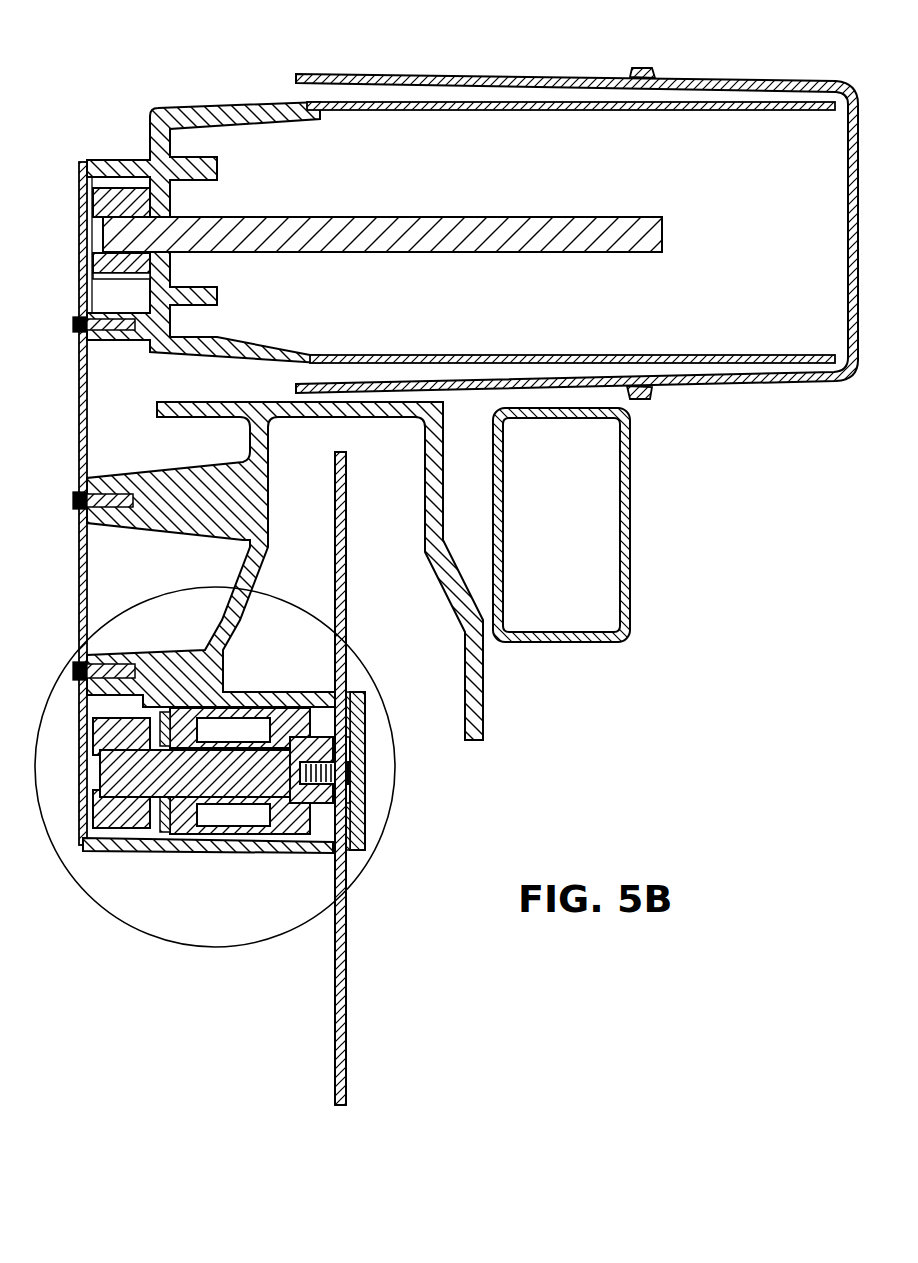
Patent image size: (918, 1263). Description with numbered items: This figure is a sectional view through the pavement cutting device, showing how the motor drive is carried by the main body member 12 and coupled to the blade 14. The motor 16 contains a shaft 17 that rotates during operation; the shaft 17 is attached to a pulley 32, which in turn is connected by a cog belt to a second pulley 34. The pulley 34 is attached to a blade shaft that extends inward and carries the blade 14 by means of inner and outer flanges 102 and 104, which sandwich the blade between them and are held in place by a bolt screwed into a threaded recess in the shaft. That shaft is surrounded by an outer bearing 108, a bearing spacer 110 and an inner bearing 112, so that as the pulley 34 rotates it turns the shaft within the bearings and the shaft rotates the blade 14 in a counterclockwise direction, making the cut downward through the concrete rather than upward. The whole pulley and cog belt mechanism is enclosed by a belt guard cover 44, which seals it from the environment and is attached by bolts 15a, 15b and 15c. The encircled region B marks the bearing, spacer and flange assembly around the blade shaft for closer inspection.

The main body member 12 is at (150, 405).
The blade 14 is at (346, 978).
The bolt 15a is at (75, 668).
The bolt 15b is at (73, 498).
The bolt 15c is at (75, 327).
The motor 16 is at (847, 82).
The shaft 17 is at (622, 218).
The pulley 32 is at (128, 188).
The pulley 34 is at (103, 835).
The belt guard cover 44 is at (80, 606).
The inner flange 102 is at (322, 838).
The outer flange 104 is at (357, 825).
The outer bearing 108 is at (275, 846).
The bearing spacer 110 is at (203, 846).
The inner bearing 112 is at (165, 842).
The detail circle B is at (395, 798).